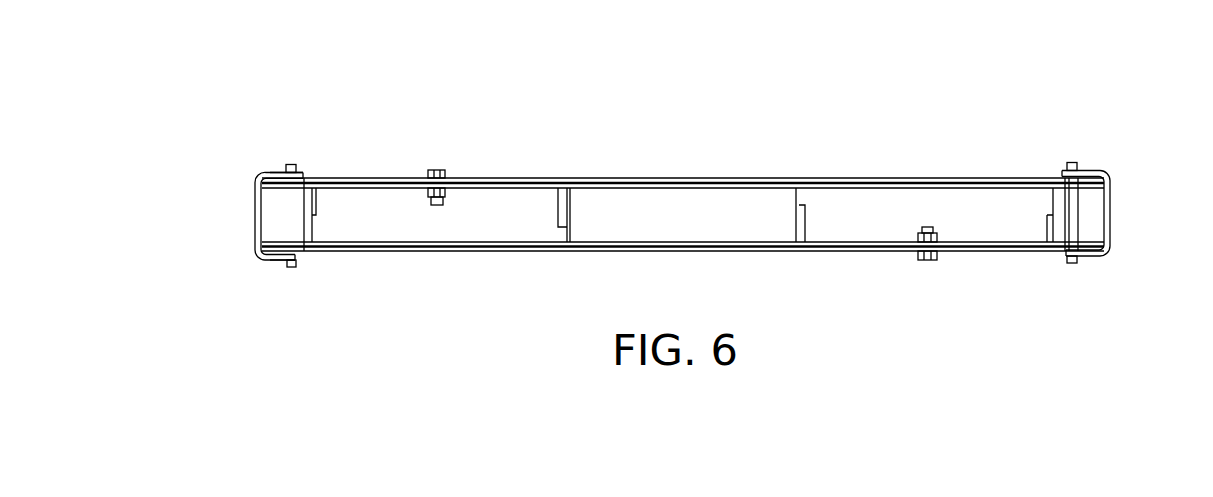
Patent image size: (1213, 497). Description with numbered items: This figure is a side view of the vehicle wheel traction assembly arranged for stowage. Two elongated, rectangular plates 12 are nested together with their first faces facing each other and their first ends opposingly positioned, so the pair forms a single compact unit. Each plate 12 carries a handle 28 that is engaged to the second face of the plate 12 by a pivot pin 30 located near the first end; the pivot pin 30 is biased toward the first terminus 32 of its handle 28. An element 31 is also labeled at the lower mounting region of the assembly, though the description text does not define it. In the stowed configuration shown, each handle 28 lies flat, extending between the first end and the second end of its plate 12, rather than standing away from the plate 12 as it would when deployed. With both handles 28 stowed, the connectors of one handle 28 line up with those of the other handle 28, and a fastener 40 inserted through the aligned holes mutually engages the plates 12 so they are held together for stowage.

The plate 12 is at (483, 188).
The handle 28 is at (702, 252).
The pivot pin 30 is at (437, 170).
The lower flange 31 is at (255, 254).
The first terminus 32 is at (262, 177).
The fastener 40 is at (255, 211).